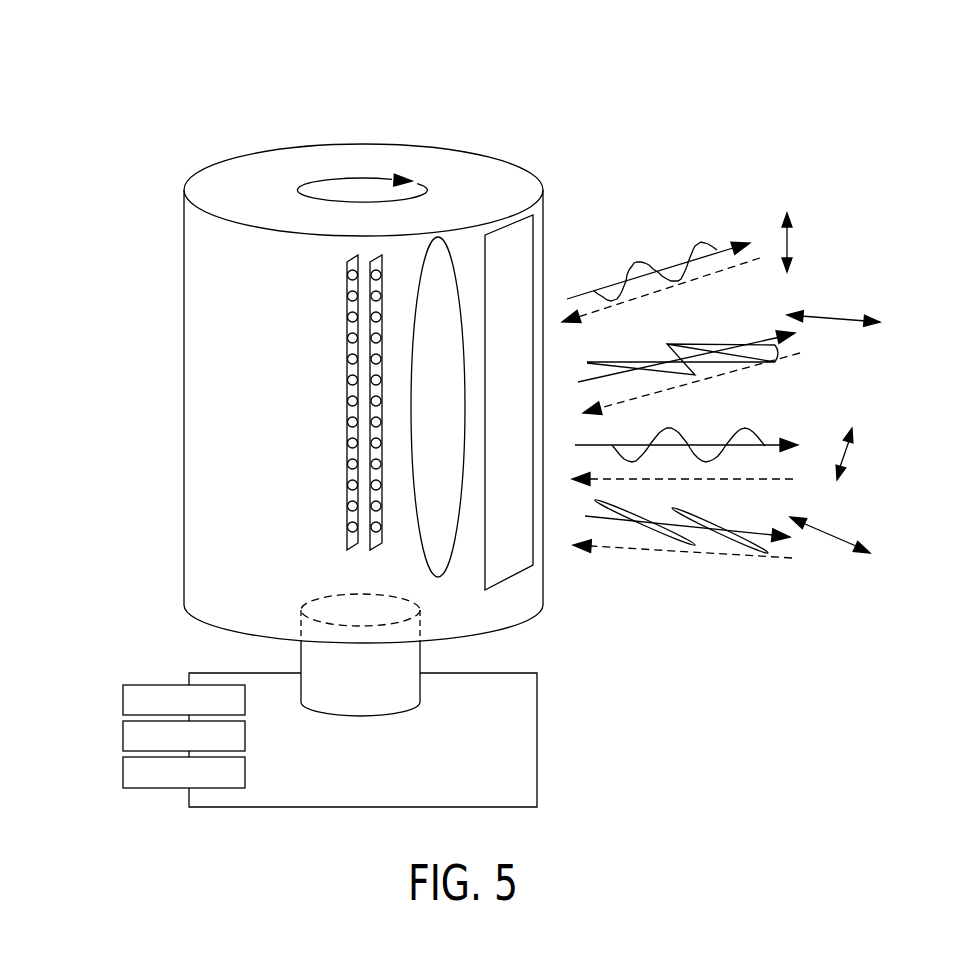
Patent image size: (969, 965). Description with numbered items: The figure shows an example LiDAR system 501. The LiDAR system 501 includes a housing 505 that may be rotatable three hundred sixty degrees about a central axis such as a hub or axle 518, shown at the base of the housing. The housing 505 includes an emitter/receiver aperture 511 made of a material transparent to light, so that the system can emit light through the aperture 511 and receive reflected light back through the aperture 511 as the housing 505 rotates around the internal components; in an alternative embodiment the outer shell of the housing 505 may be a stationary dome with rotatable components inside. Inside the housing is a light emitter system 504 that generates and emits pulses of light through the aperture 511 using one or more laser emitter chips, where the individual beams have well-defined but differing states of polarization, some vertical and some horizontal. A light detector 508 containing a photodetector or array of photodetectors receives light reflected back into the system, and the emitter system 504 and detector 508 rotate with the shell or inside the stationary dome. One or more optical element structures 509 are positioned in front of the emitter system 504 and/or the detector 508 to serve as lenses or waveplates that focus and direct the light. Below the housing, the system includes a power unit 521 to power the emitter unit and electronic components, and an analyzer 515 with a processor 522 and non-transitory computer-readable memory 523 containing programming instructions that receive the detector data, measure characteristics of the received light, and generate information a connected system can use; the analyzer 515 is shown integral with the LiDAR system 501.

The LiDAR system 501 is at (270, 110).
The light emitter system 504 is at (378, 257).
The housing 505 is at (184, 242).
The light detector 508 is at (347, 273).
The optical element structure 509 is at (439, 237).
The emitter/receiver aperture 511 is at (518, 212).
The analyzer 515 is at (537, 738).
The hub or axle 518 is at (369, 695).
The power unit 521 is at (135, 703).
The processor 522 is at (135, 741).
The non-transitory computer-readable memory 523 is at (137, 777).